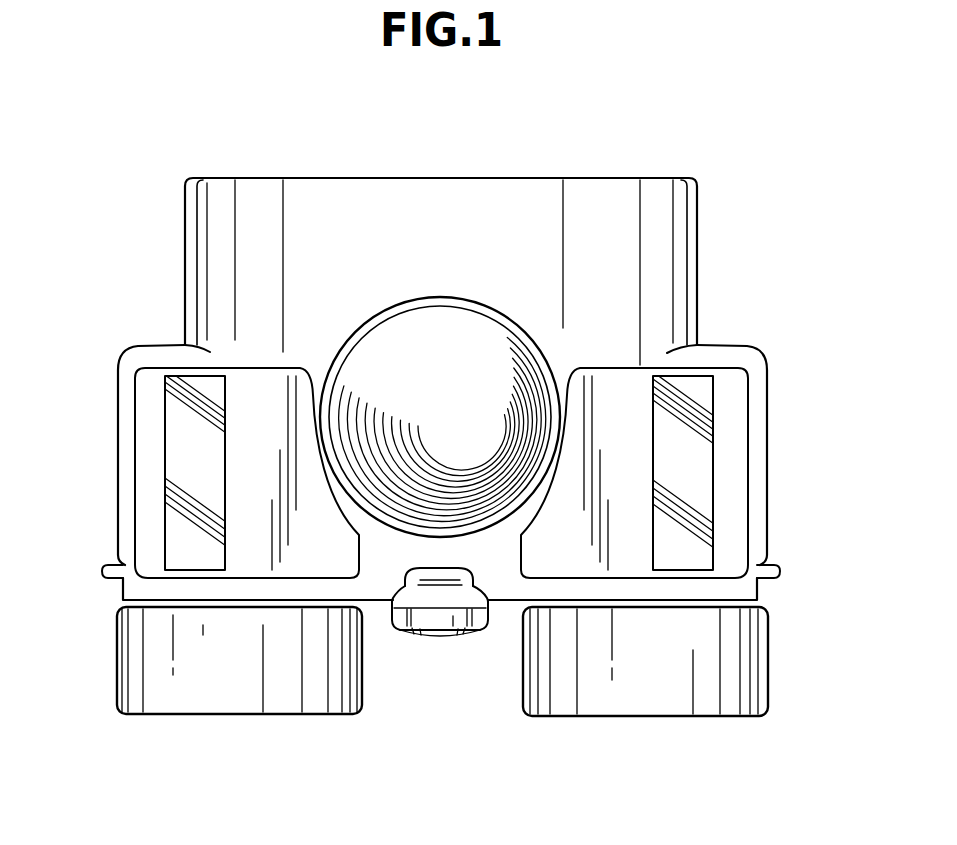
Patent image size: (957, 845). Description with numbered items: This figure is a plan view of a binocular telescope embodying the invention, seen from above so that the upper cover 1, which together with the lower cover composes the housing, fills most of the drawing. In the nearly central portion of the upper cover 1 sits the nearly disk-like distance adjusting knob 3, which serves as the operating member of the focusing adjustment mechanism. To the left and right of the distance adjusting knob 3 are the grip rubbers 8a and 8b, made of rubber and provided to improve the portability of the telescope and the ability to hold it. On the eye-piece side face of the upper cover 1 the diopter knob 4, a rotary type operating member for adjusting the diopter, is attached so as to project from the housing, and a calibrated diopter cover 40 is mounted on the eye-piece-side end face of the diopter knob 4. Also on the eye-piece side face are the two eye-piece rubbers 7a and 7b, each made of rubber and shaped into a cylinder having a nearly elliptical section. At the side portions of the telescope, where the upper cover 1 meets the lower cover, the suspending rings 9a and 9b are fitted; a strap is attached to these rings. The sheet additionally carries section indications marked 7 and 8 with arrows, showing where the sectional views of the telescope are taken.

The upper cover 1 is at (683, 258).
The distance adjusting knob 3 is at (402, 330).
The diopter knob 4 is at (465, 636).
The calibrated diopter cover 40 is at (427, 636).
The eye-piece rubber 7a is at (740, 670).
The eye-piece rubber 7b is at (126, 688).
The grip rubber 8a is at (730, 473).
The grip rubber 8b is at (147, 479).
The suspending ring 9a is at (779, 568).
The suspending ring 9b is at (105, 579).
The section line 7- 7 is at (110, 406).
The section line 8- 8 is at (440, 172).